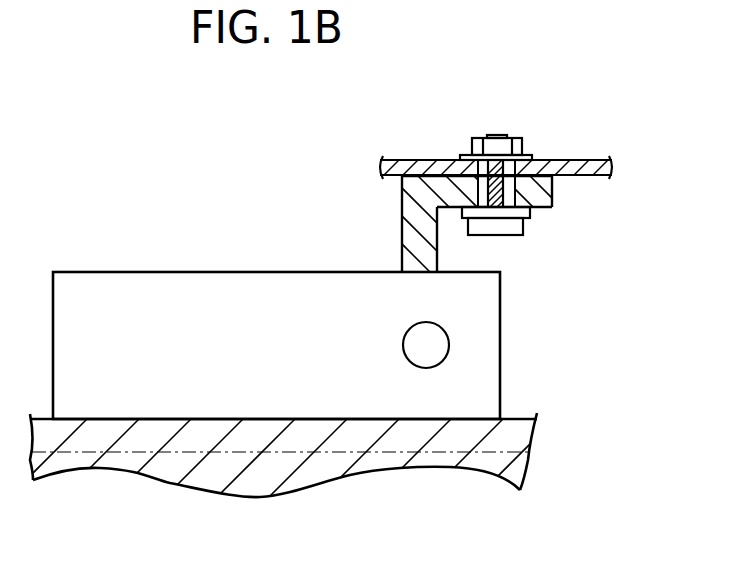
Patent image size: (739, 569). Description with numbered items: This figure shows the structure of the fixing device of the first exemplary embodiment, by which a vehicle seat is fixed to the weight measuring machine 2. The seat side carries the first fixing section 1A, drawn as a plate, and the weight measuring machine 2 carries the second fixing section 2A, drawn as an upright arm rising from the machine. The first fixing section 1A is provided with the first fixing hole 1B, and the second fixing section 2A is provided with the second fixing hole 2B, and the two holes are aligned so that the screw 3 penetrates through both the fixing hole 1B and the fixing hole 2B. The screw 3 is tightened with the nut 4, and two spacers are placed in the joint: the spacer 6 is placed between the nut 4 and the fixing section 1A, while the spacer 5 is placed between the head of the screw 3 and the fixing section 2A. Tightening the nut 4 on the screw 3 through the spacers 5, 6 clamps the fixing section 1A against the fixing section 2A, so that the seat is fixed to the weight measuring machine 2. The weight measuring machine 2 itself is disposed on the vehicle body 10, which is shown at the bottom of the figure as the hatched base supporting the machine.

The first fixing section 1A is at (408, 163).
The first fixing hole 1B is at (523, 157).
The weight measuring machine 2 is at (235, 290).
The second fixing section 2A is at (417, 242).
The second fixing hole 2B is at (405, 192).
The screw 3 is at (498, 227).
The nut 4 is at (495, 147).
The spacer 5 is at (512, 212).
The spacer 6 is at (465, 155).
The vehicle body 10 is at (408, 438).